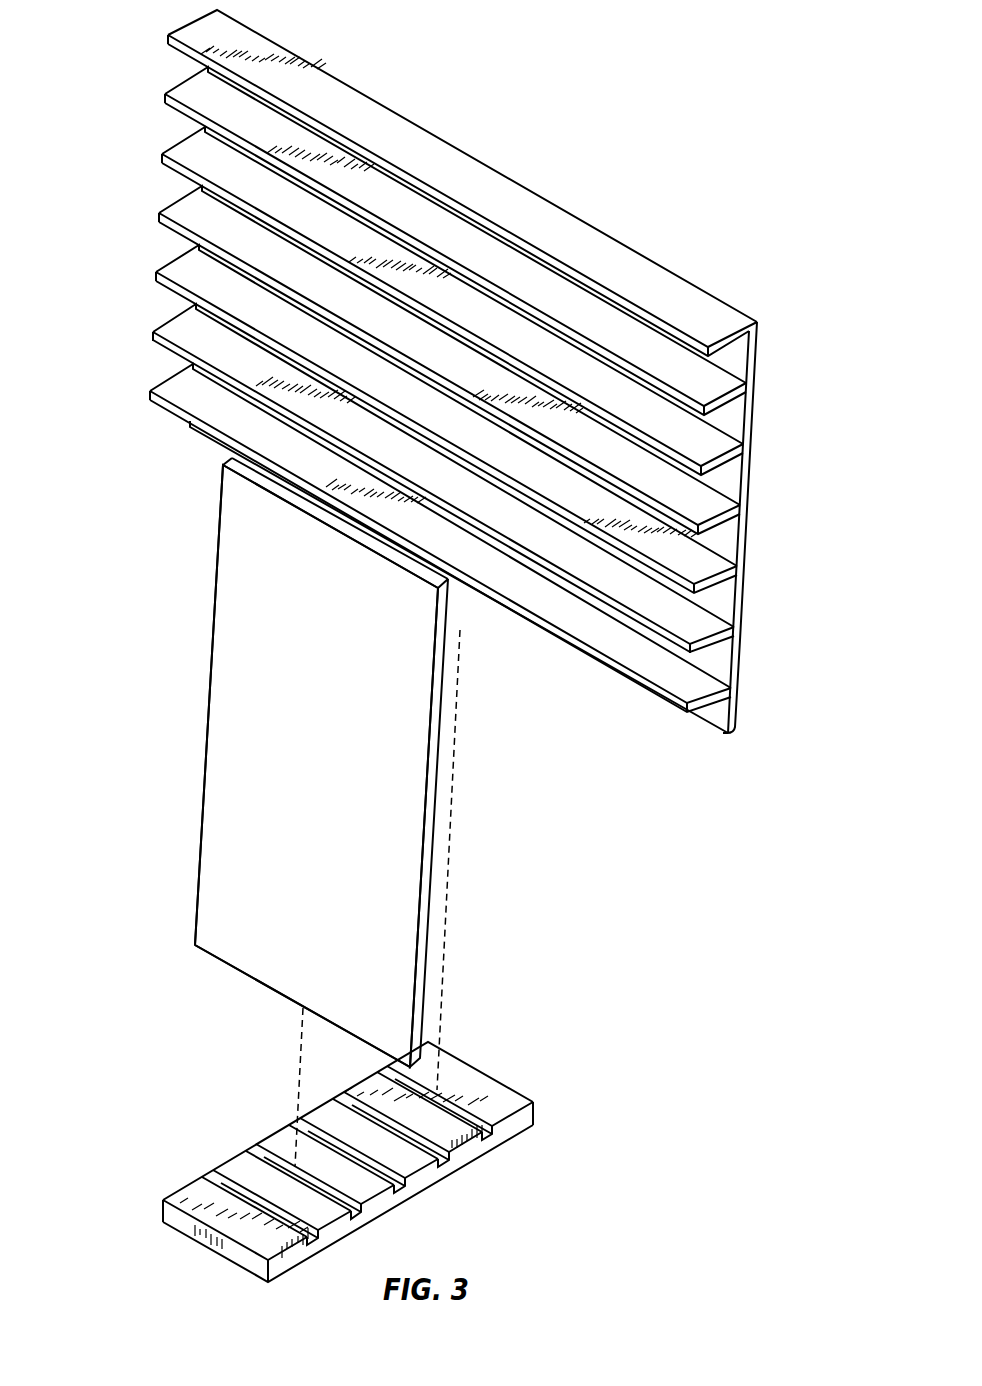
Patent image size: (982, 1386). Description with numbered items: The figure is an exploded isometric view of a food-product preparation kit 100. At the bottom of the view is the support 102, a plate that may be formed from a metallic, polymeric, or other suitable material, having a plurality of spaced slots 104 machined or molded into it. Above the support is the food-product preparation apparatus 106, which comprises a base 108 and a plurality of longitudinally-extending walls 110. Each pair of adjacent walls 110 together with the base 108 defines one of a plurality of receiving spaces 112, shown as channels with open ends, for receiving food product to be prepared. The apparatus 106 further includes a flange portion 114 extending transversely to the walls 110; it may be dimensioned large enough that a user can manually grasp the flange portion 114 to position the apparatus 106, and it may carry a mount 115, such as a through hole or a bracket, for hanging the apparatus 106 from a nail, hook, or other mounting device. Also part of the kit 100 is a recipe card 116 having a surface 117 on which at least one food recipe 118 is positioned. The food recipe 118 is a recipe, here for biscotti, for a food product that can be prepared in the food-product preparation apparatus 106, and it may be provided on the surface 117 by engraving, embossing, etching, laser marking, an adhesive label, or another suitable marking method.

The food-product preparation kit 100 is at (669, 93).
The support 102 is at (527, 1121).
The slots 104 is at (192, 1160).
The food-product preparation apparatus 106 is at (645, 235).
The base 108 is at (758, 349).
The longitudinally-extending walls 110 is at (729, 344).
The receiving spaces 112 is at (162, 65).
The flange portion 114 is at (748, 686).
The mount 115 is at (449, 578).
The recipe card 116 is at (214, 483).
The surface 117 is at (195, 943).
The food recipe 118 is at (193, 664).